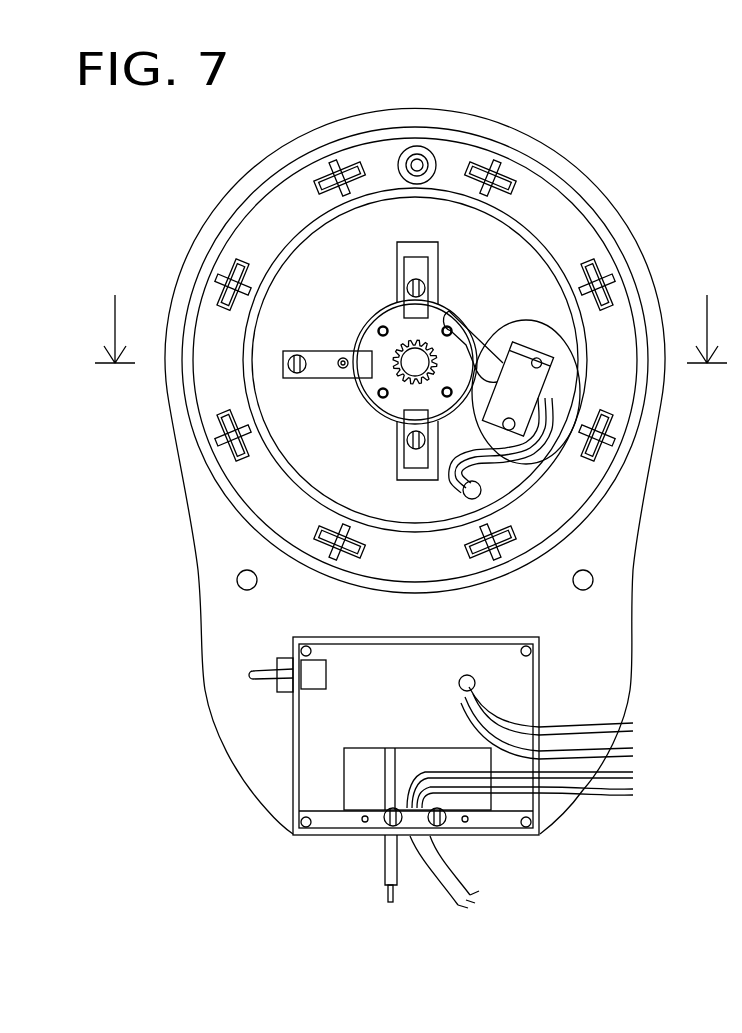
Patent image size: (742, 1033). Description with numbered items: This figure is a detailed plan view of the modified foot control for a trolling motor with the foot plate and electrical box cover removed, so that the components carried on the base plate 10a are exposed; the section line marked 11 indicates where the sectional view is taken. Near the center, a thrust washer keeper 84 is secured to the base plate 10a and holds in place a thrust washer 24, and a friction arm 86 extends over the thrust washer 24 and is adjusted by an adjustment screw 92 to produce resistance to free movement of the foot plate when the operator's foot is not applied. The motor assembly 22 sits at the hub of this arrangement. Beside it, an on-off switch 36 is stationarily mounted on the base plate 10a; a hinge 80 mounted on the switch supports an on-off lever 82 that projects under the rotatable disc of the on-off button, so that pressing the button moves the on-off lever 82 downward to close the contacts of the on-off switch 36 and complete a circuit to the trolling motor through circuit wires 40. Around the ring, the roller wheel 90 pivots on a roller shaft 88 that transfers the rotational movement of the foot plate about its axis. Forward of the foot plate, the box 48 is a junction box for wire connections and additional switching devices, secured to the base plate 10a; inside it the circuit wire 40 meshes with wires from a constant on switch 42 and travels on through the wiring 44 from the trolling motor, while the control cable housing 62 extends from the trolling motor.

The base plate 10a is at (230, 627).
The section line 11- 11 is at (407, 286).
The motor 22 is at (383, 395).
The thrust washer 24 is at (396, 322).
The on-off switch 36 is at (537, 360).
The circuit wire 40 is at (483, 490).
The constant on switch 42 is at (249, 677).
The wiring from trolling motor 44 is at (448, 882).
The box 48 is at (540, 678).
The control cable housing 62 is at (387, 874).
The hinge 80 is at (523, 380).
The on-off lever 82 is at (473, 347).
The thrust washer keeper 84 is at (413, 454).
The friction arm 86 is at (323, 360).
The roller shaft 88 is at (495, 168).
The roller wheel 90 is at (502, 188).
The adjustment screw 92 is at (347, 367).